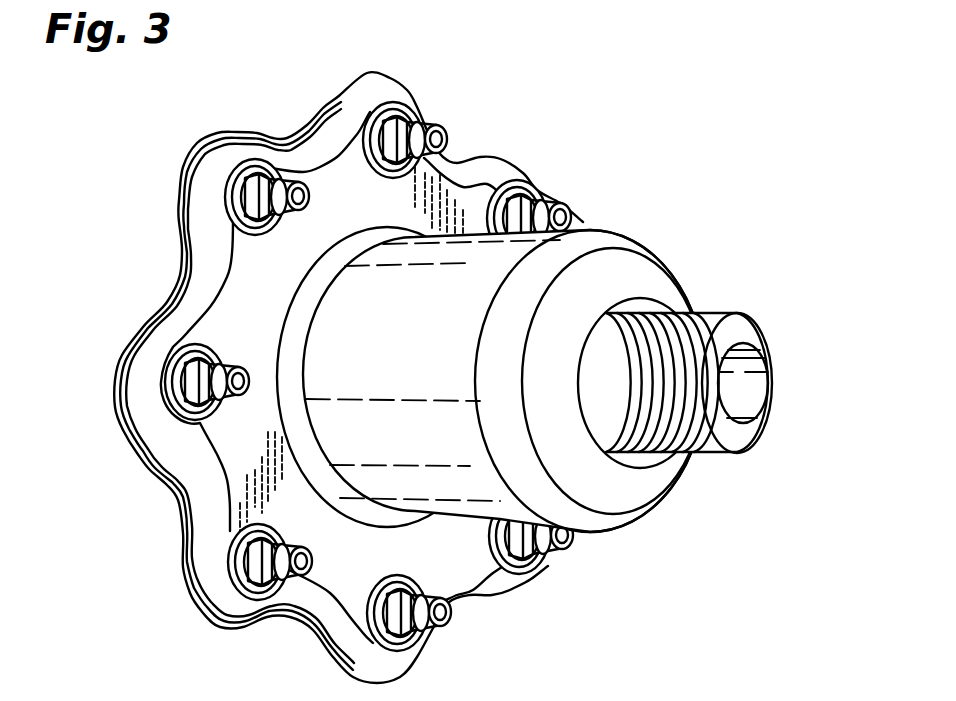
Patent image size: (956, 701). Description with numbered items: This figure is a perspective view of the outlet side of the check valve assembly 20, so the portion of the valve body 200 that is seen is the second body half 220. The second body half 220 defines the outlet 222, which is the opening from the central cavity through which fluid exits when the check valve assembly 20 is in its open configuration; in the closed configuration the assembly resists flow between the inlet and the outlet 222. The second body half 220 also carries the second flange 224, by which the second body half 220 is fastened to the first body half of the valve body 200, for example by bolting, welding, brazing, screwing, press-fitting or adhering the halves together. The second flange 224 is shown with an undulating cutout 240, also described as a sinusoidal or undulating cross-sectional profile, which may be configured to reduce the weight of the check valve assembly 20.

The check valve assembly 20 is at (678, 90).
The valve body 200 is at (219, 86).
The undulating cutout 240 is at (342, 98).
The second flange 224 is at (386, 94).
The second body half 220 is at (632, 238).
The outlet 222 is at (752, 385).